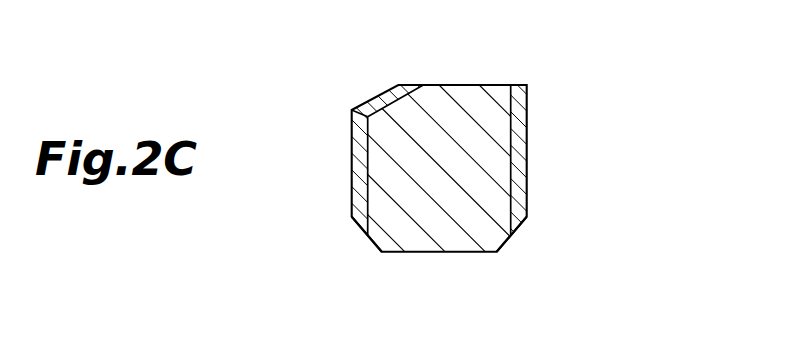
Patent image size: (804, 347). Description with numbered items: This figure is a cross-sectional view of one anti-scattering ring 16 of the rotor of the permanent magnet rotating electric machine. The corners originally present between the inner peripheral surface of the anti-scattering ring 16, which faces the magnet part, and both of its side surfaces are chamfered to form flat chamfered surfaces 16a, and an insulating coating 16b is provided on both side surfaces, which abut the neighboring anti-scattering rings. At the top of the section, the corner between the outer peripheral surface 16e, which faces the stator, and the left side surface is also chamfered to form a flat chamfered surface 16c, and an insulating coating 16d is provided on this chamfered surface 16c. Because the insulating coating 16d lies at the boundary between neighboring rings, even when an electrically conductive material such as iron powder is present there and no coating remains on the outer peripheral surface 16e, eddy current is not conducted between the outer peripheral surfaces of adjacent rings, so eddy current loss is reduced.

The anti-scattering ring 16 is at (440, 228).
The chamfered surface 16a is at (370, 242).
The insulating coating 16b is at (362, 164).
The chamfered surface 16c is at (390, 85).
The insulating coating 16d is at (378, 102).
The outer peripheral surface 16e is at (462, 85).